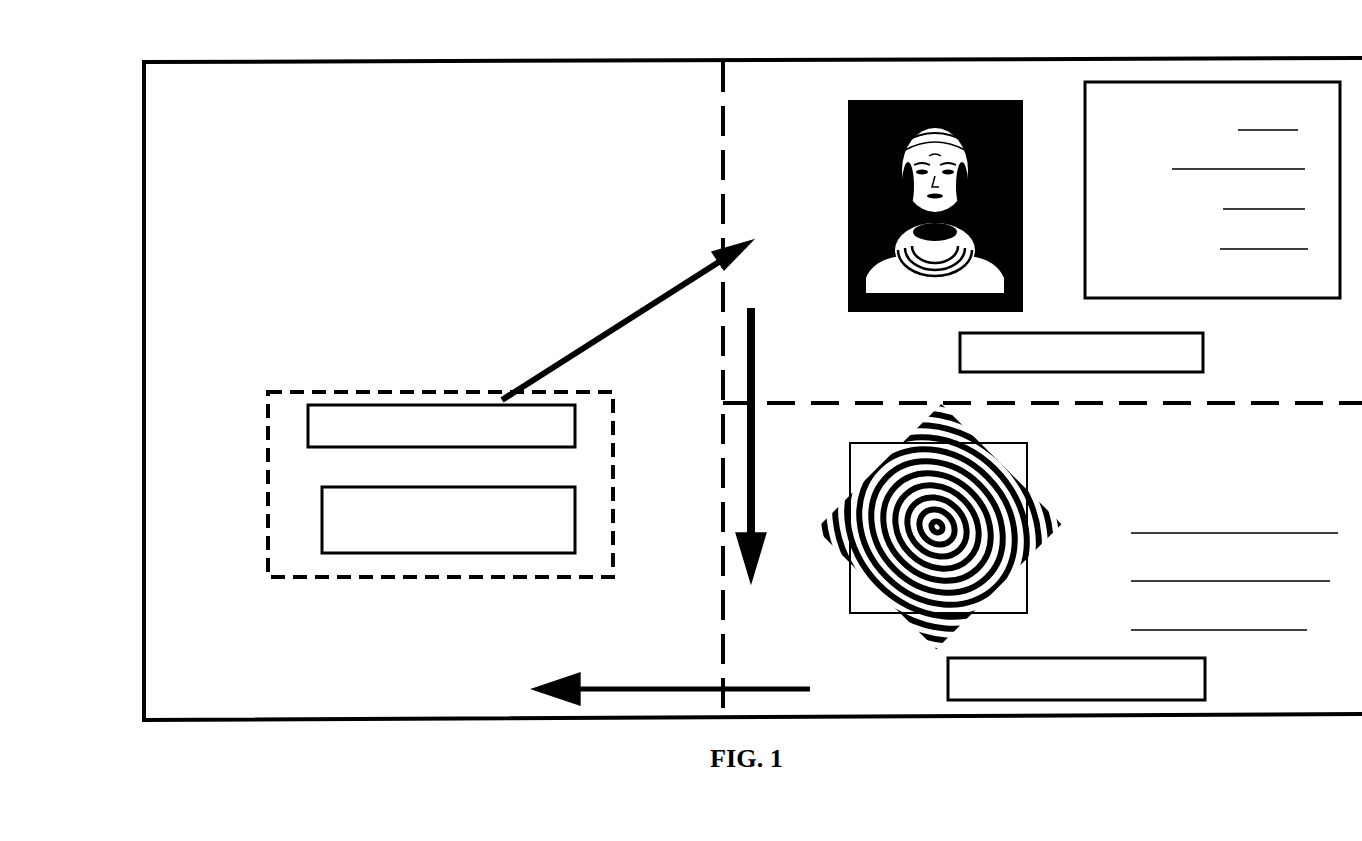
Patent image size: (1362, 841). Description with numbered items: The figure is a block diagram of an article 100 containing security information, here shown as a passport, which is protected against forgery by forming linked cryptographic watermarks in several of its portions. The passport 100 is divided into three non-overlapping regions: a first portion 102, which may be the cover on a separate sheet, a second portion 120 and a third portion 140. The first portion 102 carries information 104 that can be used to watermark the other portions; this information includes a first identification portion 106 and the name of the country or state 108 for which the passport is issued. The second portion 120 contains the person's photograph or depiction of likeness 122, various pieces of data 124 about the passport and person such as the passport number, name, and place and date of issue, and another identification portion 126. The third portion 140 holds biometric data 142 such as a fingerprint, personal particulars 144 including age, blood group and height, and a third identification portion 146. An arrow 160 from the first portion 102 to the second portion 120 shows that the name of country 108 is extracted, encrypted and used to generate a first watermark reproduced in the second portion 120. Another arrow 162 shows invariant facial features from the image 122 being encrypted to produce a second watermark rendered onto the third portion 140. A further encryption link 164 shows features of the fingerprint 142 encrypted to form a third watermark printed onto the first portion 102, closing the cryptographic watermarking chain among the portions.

The article 100 is at (636, 28).
The first portion 102 is at (268, 97).
The information 104 is at (268, 392).
The first identification portion 106 is at (308, 430).
The name of the country or state 108 is at (374, 554).
The second portion 120 is at (818, 86).
The photograph or depiction of likeness 122 is at (848, 201).
The pieces of data 124 is at (1145, 83).
The another identification portion 126 is at (1203, 355).
The third portion 140 is at (1240, 698).
The biometric data 142 is at (1027, 443).
The personal particulars 144 is at (1227, 460).
The third identification portion 146 is at (948, 670).
The arrow 160 is at (630, 320).
The another arrow 162 is at (745, 473).
The encryption link 164 is at (627, 693).